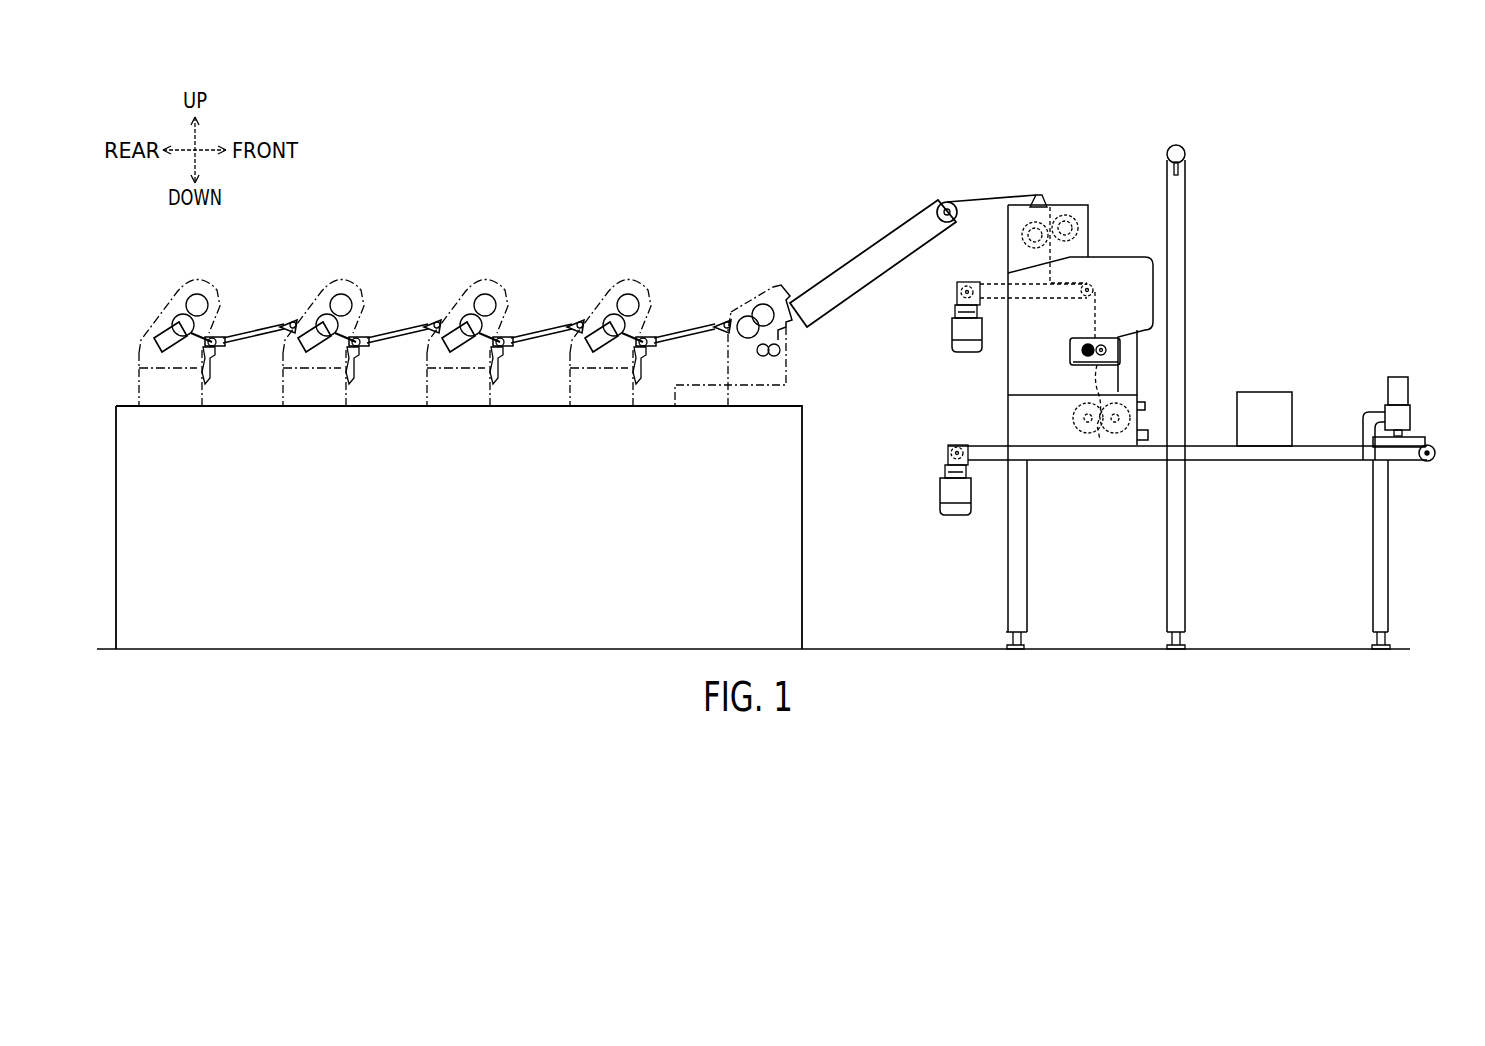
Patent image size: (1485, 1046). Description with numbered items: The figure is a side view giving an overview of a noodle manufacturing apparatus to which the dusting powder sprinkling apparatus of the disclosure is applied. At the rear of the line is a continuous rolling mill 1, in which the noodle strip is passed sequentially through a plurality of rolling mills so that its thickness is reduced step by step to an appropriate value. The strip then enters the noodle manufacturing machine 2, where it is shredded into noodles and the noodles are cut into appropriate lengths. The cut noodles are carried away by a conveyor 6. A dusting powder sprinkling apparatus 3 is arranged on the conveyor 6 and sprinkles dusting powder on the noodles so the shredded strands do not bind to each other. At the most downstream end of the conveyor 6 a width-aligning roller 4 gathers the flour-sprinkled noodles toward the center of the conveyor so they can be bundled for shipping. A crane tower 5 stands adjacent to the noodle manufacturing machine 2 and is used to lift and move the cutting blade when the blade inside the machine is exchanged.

The continuous rolling mill 1 is at (514, 218).
The noodle manufacturing machine 2 is at (1063, 167).
The dusting powder sprinkling apparatus 3 is at (1262, 386).
The width-aligning roller 4 is at (1414, 393).
The crane tower 5 is at (1192, 166).
The conveyor 6 is at (1251, 462).